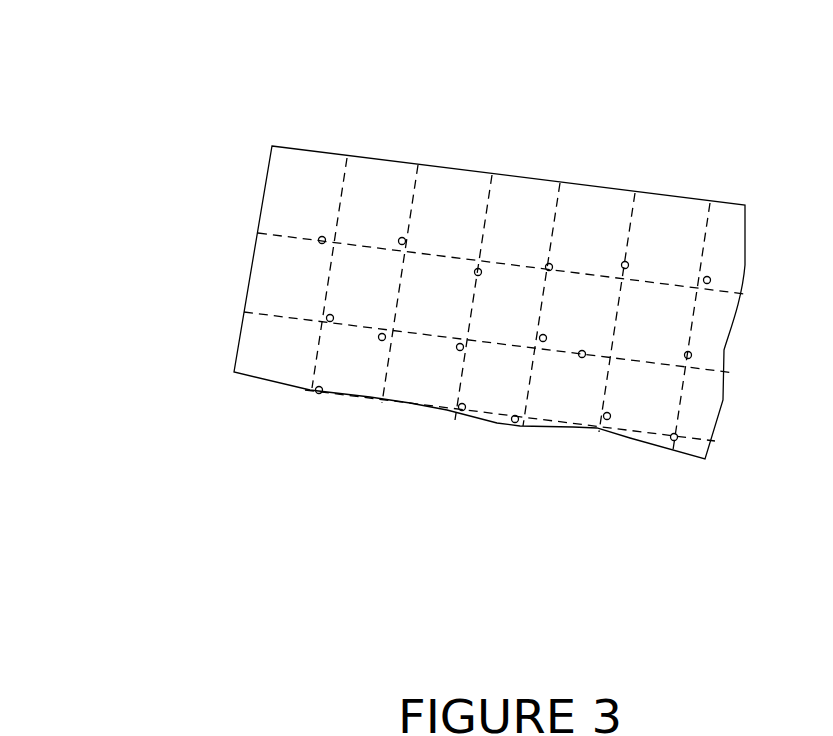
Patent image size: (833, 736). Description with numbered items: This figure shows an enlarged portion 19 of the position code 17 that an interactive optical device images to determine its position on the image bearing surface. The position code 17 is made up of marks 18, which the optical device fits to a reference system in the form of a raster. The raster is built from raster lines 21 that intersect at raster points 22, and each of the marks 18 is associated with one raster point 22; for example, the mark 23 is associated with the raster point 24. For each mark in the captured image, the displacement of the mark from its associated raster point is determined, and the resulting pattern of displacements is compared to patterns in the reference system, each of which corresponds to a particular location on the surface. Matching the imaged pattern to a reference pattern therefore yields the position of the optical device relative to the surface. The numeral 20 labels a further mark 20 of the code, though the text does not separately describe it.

The enlarged portion 19 is at (160, 39).
The position code 17 is at (535, 247).
The marks 18 is at (321, 394).
The hole 20 is at (385, 340).
The raster lines 21 is at (304, 236).
The raster points 22 is at (709, 283).
The mark 23 is at (398, 238).
The raster point 24 is at (404, 248).